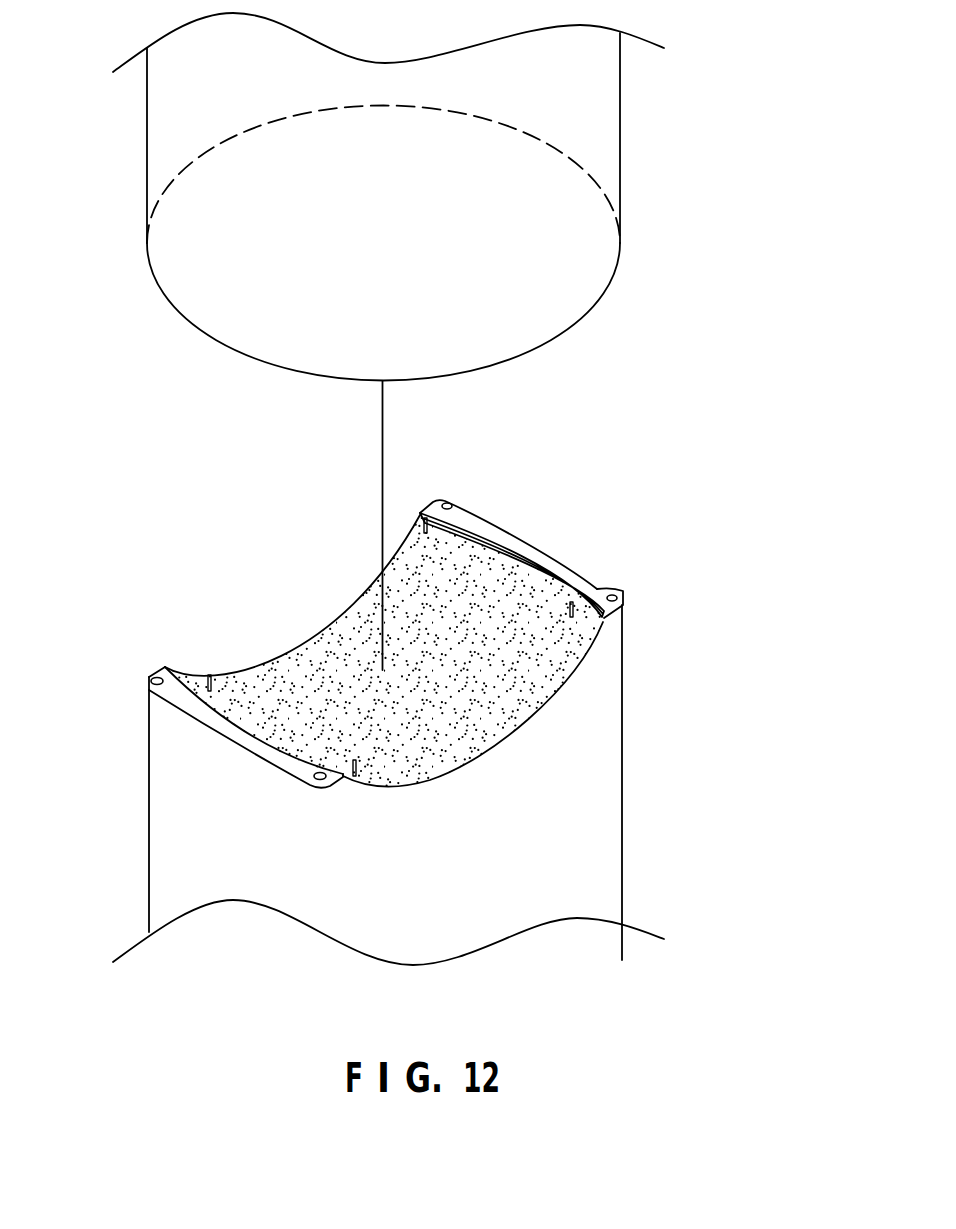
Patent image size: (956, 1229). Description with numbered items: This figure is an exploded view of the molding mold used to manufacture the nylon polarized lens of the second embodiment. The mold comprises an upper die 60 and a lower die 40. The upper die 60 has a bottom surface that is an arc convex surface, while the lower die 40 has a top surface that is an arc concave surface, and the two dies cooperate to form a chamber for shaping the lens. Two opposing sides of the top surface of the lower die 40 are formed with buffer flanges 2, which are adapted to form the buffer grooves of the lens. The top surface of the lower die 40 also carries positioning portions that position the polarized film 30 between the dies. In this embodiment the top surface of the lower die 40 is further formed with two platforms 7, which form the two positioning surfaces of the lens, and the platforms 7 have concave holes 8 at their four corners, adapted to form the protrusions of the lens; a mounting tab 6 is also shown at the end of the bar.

The upper die 60 is at (603, 124).
The lower die 40 is at (607, 728).
The polarized film 30 is at (305, 660).
The platform 7 is at (468, 518).
The buffer flange 2 is at (567, 573).
The mounting tab 6 is at (602, 589).
The concave hole 8 is at (622, 600).